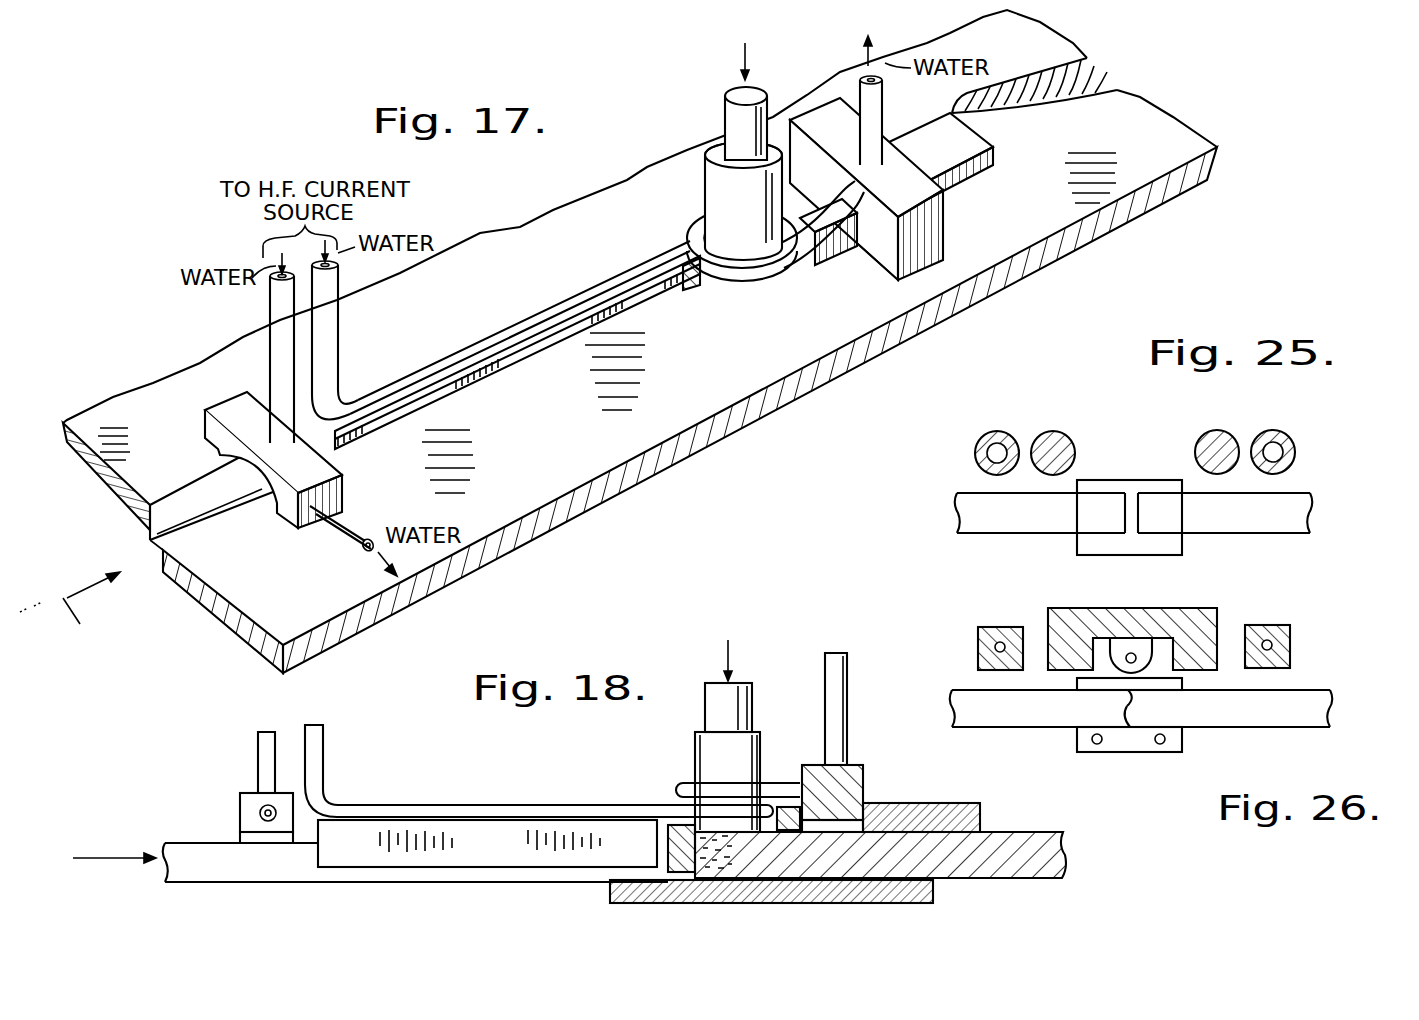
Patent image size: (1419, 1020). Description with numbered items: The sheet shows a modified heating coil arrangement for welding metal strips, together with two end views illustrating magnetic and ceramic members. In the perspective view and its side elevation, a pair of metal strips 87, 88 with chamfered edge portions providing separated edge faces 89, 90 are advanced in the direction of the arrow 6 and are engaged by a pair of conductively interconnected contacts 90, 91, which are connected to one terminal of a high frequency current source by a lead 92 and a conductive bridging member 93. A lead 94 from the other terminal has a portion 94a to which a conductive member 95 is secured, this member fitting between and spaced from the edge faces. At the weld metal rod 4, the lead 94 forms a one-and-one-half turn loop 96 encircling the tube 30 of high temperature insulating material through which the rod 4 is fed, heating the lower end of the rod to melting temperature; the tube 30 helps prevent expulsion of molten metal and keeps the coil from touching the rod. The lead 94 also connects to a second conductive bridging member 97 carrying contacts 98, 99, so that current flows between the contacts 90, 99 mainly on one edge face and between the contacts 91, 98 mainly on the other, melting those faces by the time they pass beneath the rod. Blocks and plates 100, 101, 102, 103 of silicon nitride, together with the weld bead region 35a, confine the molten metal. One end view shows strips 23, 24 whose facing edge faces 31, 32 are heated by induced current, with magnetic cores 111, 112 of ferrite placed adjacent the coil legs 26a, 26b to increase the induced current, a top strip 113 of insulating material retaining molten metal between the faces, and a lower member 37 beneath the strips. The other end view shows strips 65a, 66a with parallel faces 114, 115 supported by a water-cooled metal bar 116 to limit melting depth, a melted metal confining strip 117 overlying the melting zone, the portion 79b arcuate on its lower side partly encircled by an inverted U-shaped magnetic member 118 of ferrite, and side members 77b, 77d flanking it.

In FIG. 17, the metal rod 4 is at (733, 113).
In FIG. 18, the metal rod 4 is at (712, 706).
In FIG. 17, the arrow 6 is at (70, 604).
In FIG. 25, the strip 23 is at (987, 527).
In FIG. 25, the strip 24 is at (1233, 527).
In FIG. 25, the coil leg 26a is at (973, 455).
In FIG. 25, the coil leg 26b is at (1297, 452).
In FIG. 17, the tube 30 is at (722, 183).
In FIG. 18, the tube 30 is at (707, 745).
In FIG. 25, the edge face 31 is at (1125, 514).
In FIG. 25, the edge face 32 is at (1140, 513).
In FIG. 17, the weld bead 35a is at (1092, 82).
In FIG. 18, the weld bead 35a is at (1013, 835).
In FIG. 25, the clamp block 37 is at (1130, 550).
In FIG. 26, the strip 65a is at (990, 723).
In FIG. 26, the strip 66a is at (1257, 720).
In FIG. 26, the guide block 77b is at (980, 633).
In FIG. 26, the guide block 77d is at (1288, 632).
In FIG. 26, the portion 79b is at (1107, 637).
In FIG. 17, the metal strip 87 is at (118, 503).
In FIG. 17, the metal strip 88 is at (245, 634).
In FIG. 17, the edge face 89 is at (152, 524).
In FIG. 18, the edge face 89 is at (243, 879).
In FIG. 17, the contact 90 is at (212, 448).
In FIG. 18, the contact 90 is at (240, 841).
In FIG. 17, the contact 91 is at (283, 526).
In FIG. 17, the lead 92 is at (270, 368).
In FIG. 18, the lead 92 is at (260, 740).
In FIG. 17, the conductive bridging member 93 is at (343, 470).
In FIG. 18, the conductive bridging member 93 is at (241, 796).
In FIG. 17, the lead 94 is at (339, 347).
In FIG. 18, the lead 94 is at (326, 748).
In FIG. 17, the lead portion 94a is at (558, 323).
In FIG. 17, the conductive member 95 is at (486, 375).
In FIG. 18, the conductive member 95 is at (495, 857).
In FIG. 17, the loop 96 is at (767, 270).
In FIG. 17, the second conductive bridging member 97 is at (937, 230).
In FIG. 17, the contact 98 is at (907, 281).
In FIG. 17, the contact 99 is at (799, 184).
In FIG. 18, the contact 99 is at (845, 826).
In FIG. 17, the block 100 is at (694, 286).
In FIG. 18, the block 100 is at (678, 823).
In FIG. 17, the block 101 is at (824, 248).
In FIG. 18, the block 101 is at (788, 806).
In FIG. 17, the block 102 is at (985, 162).
In FIG. 18, the block 102 is at (993, 790).
In FIG. 18, the plate 103 is at (612, 895).
In FIG. 25, the magnetic core 111 is at (1053, 440).
In FIG. 25, the magnetic core 112 is at (1200, 437).
In FIG. 25, the top strip 113 is at (1123, 487).
In FIG. 26, the face 114 is at (1125, 698).
In FIG. 26, the face 115 is at (1135, 718).
In FIG. 26, the water-cooled metal bar 116 is at (1123, 745).
In FIG. 26, the melted metal confining strip 117 is at (1177, 684).
In FIG. 26, the inverted U-shaped magnetic member 118 is at (1213, 615).